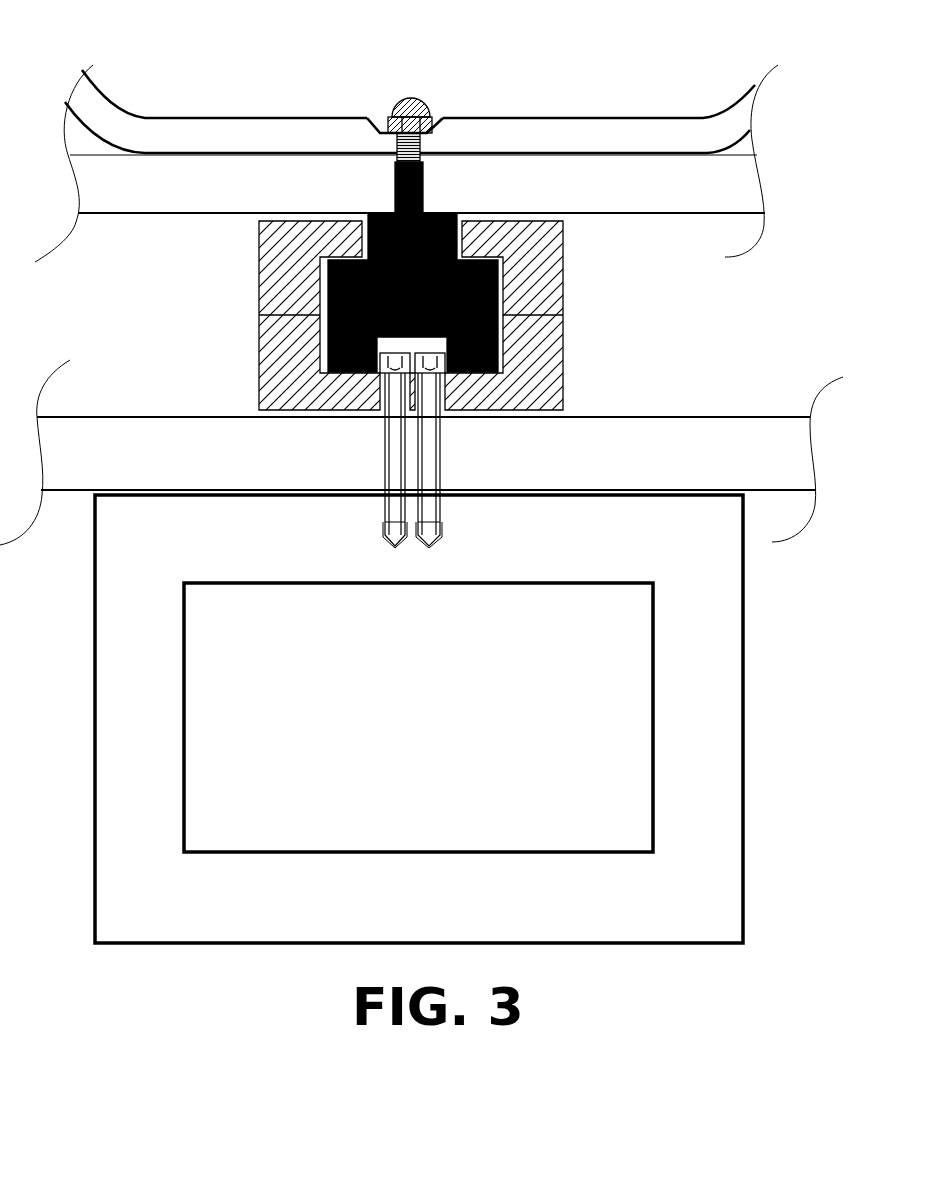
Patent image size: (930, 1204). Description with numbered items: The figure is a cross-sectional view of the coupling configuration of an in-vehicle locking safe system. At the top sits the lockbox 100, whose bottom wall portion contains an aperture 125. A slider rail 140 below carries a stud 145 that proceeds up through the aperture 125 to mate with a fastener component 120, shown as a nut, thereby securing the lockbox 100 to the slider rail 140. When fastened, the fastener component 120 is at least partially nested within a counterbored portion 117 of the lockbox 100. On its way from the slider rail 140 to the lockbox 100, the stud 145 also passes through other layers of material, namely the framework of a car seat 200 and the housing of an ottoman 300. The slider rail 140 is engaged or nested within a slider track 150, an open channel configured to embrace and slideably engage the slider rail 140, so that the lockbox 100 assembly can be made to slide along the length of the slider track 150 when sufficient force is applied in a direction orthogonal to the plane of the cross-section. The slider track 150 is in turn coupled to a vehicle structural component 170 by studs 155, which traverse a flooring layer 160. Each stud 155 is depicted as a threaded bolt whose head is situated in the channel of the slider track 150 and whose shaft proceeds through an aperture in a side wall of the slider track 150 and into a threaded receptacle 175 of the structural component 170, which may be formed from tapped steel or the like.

The lockbox 100 is at (200, 137).
The counterbored portion 117 is at (383, 130).
The fastener component 120 is at (422, 100).
The aperture 125 is at (425, 135).
The slider rail 140 is at (440, 212).
The stud 145 is at (395, 193).
The slider track 150 is at (563, 240).
The stud 155 is at (395, 460).
The flooring layer 160 is at (143, 437).
The vehicle structural component 170 is at (143, 917).
The threaded receptacle 175 is at (385, 545).
The framework of a car seat 200 is at (421, 243).
The housing of an ottoman 300 is at (197, 198).